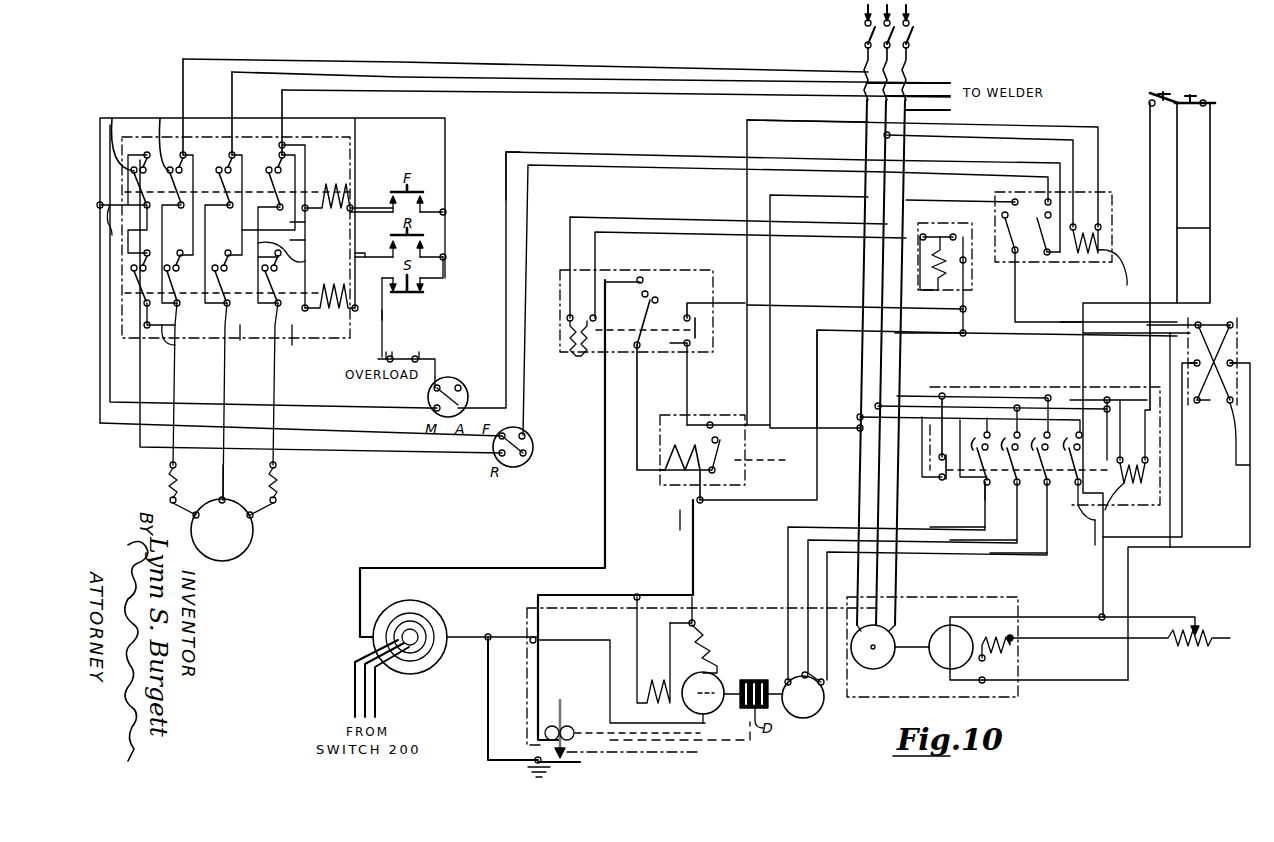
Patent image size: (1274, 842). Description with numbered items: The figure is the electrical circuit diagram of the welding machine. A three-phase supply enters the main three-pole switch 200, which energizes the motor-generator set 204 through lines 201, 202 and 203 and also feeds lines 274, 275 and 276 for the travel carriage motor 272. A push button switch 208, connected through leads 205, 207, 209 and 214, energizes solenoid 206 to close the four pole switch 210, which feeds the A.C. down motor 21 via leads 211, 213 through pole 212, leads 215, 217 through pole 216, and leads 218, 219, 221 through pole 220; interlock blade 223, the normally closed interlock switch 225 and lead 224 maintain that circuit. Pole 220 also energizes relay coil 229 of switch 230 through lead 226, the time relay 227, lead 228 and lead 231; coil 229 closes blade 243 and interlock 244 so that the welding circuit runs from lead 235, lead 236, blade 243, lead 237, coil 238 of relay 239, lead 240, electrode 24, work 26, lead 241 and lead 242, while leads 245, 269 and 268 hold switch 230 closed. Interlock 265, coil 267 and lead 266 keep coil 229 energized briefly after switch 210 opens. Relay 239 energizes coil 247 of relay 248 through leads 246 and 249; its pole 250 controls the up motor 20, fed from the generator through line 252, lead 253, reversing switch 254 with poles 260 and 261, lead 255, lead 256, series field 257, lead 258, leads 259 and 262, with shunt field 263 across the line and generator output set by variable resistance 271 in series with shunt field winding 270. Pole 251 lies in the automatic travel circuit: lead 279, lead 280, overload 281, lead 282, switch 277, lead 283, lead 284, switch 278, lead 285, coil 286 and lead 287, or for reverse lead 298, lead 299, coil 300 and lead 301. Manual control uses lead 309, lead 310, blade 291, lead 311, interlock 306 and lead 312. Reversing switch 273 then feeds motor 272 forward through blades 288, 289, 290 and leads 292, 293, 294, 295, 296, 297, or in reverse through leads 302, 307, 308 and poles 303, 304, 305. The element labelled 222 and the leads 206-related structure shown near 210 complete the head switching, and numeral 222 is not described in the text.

The up motor 20 is at (718, 682).
The down motor 21 is at (794, 716).
The electrode 24 is at (562, 708).
The work 26 is at (575, 768).
The main three-pole switch 200 is at (868, 42).
The line 201 is at (874, 507).
The line 202 is at (874, 488).
The line 203 is at (860, 467).
The motor-generator set 204 is at (870, 671).
The lead 205 is at (966, 378).
The solenoid 206 is at (1174, 486).
The lead 207 is at (1208, 227).
The push button switch 208 is at (1150, 97).
The lead 209 is at (1150, 178).
The four pole switch 210 is at (1138, 548).
The lead 211 is at (1044, 398).
The pole 212 is at (1042, 530).
The lead 213 is at (957, 556).
The lead 214 is at (865, 395).
The lead 215 is at (1014, 389).
The pole 216 is at (1050, 546).
The lead 217 is at (897, 556).
The lead 218 is at (862, 413).
The lead 219 is at (969, 393).
The pole 220 is at (988, 502).
The lead 221 is at (915, 520).
The contactor coil 222 is at (1102, 482).
The blade 223 is at (1083, 508).
The lead 224 is at (1086, 370).
The interlock switch 225 is at (1208, 102).
The lead 226 is at (963, 332).
The time relay 227 is at (936, 230).
The lead 228 is at (800, 233).
The relay coil 229 is at (573, 342).
The switch 230 is at (642, 262).
The lead 231 is at (626, 217).
The lead 235 is at (358, 603).
The lead 236 is at (645, 278).
The lead 237 is at (640, 408).
The coil 238 is at (670, 486).
The relay 239 is at (674, 510).
The lead 240 is at (542, 620).
The lead 241 is at (476, 732).
The lead 242 is at (460, 636).
The blade 243 is at (654, 308).
The interlock switch 244 is at (686, 344).
The lead 245 is at (764, 410).
The lead 246 is at (735, 395).
The coil 247 is at (1112, 272).
The relay 248 is at (1041, 256).
The lead 249 is at (1070, 150).
The pole 250 is at (1009, 250).
The pole 251 is at (1068, 258).
The line 252 is at (1037, 621).
The lead 253 is at (1184, 514).
The reversing switch 254 is at (1258, 274).
The lead 255 is at (1022, 330).
The lead 256 is at (932, 205).
The series field 257 is at (715, 648).
The lead 258 is at (610, 673).
The lead 259 is at (716, 504).
The pole 260 is at (1259, 310).
The pole 261 is at (1184, 323).
The lead 262 is at (1064, 680).
The shunt field 263 is at (647, 682).
The interlock 265 is at (940, 480).
The lead 266 is at (925, 352).
The coil 267 is at (963, 290).
The lead 268 is at (805, 300).
The lead 269 is at (690, 420).
The shunt field winding 270 is at (1020, 655).
The variable resistance 271 is at (1196, 642).
The motor 272 is at (222, 562).
The reversing switch 273 is at (295, 348).
The line 274 is at (500, 70).
The line 275 is at (596, 80).
The line 276 is at (562, 93).
The switch 277 is at (446, 374).
The switch 278 is at (536, 446).
The lead 279 is at (445, 142).
The lead 280 is at (382, 313).
The overload 281 is at (392, 354).
The lead 282 is at (440, 372).
The lead 283 is at (556, 155).
The lead 284 is at (552, 166).
The lead 285 is at (418, 117).
The operating coil 286 is at (350, 208).
The lead 287 is at (302, 153).
The blade 288 is at (158, 133).
The blade 289 is at (218, 207).
The blade 290 is at (300, 172).
The blade 291 is at (104, 151).
The lead 292 is at (172, 332).
The lead 293 is at (170, 464).
The lead 294 is at (290, 252).
The lead 295 is at (280, 457).
The lead 296 is at (300, 243).
The lead 297 is at (223, 484).
The lead 298 is at (140, 437).
The lead 299 is at (248, 336).
The operating coil 300 is at (324, 342).
The lead 301 is at (378, 285).
The lead 302 is at (196, 176).
The pole 303 is at (174, 309).
The pole 304 is at (232, 309).
The pole 305 is at (284, 309).
The interlock switch 306 is at (152, 299).
The lead 307 is at (260, 178).
The lead 308 is at (300, 225).
The lead 309 is at (344, 406).
The lead 310 is at (137, 206).
The lead 311 is at (112, 220).
The lead 312 is at (378, 245).